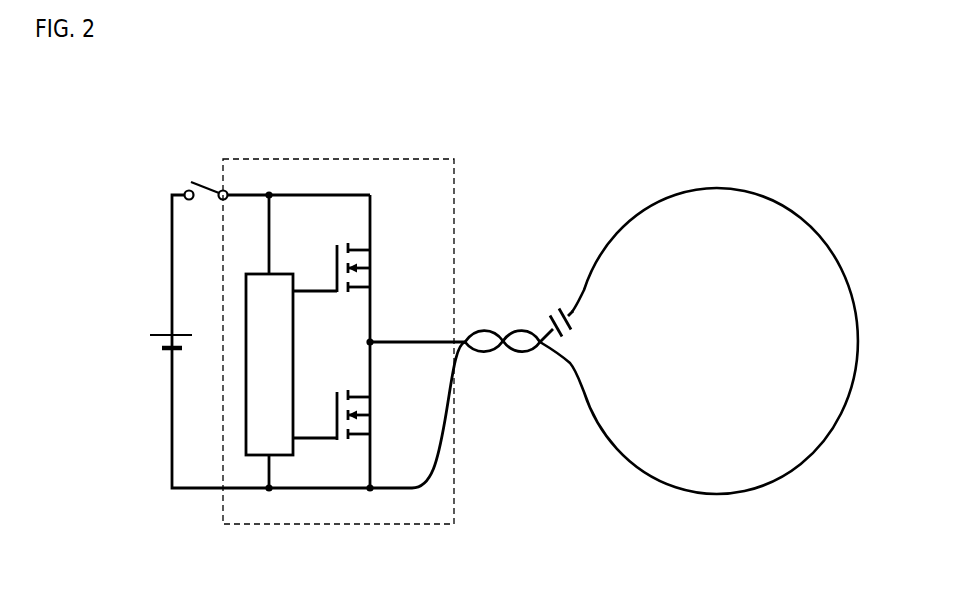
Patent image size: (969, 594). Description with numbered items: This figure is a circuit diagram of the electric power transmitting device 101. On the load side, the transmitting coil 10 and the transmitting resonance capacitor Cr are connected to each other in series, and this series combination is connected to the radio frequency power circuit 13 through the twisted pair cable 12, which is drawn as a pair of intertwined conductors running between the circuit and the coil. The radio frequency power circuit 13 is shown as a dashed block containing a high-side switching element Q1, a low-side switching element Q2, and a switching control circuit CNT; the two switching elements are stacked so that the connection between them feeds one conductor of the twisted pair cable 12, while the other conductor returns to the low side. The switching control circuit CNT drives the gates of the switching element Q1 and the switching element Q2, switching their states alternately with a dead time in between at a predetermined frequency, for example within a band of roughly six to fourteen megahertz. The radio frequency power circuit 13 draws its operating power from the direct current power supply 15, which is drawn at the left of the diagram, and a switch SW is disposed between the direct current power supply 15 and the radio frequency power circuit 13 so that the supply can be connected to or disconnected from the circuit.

The electric power transmitting device 101 is at (712, 82).
The transmitting coil 10 is at (810, 222).
The twisted pair cable 12 is at (538, 327).
The radio frequency power circuit 13 is at (389, 158).
The direct current power supply 15 is at (152, 348).
The switch SW is at (206, 178).
The switching control circuit CNT is at (283, 273).
The transmitting resonance capacitor Cr is at (550, 306).
The high-side switching element Q1 is at (376, 267).
The low-side switching element Q2 is at (376, 415).